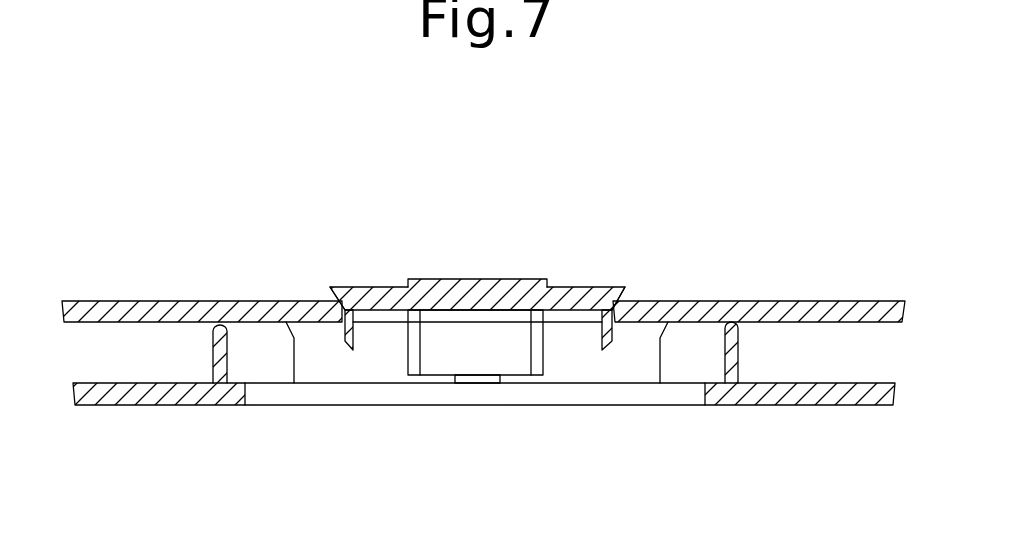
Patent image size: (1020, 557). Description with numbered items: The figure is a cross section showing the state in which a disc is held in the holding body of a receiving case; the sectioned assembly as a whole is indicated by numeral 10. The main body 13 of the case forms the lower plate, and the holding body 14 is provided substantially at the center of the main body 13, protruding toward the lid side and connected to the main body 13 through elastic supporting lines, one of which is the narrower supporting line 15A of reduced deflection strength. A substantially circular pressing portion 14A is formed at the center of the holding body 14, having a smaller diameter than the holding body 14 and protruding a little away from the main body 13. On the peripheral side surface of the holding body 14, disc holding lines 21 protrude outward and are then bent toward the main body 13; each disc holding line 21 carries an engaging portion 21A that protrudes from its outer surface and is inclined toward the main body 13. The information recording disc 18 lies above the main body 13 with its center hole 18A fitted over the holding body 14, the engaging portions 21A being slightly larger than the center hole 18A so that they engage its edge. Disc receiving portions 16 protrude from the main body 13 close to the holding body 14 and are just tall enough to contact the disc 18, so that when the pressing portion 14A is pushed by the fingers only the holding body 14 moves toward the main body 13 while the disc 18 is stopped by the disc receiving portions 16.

The sensor unit 10 is at (463, 226).
The main body 13 is at (797, 406).
The holding body 14 is at (543, 256).
The pressing portion 14A is at (432, 280).
The supporting line 15A is at (501, 381).
The disc receiving portion 16 is at (213, 355).
The information recording disc 18 is at (857, 299).
The center hole 18A is at (342, 323).
The disc holding line 21 is at (356, 342).
The engaging portion 21A is at (331, 289).